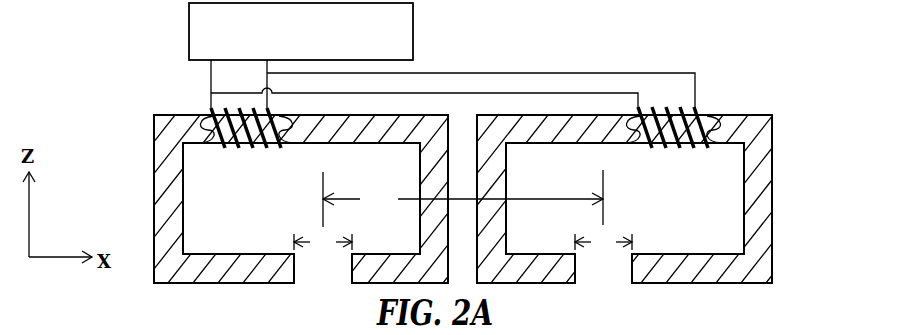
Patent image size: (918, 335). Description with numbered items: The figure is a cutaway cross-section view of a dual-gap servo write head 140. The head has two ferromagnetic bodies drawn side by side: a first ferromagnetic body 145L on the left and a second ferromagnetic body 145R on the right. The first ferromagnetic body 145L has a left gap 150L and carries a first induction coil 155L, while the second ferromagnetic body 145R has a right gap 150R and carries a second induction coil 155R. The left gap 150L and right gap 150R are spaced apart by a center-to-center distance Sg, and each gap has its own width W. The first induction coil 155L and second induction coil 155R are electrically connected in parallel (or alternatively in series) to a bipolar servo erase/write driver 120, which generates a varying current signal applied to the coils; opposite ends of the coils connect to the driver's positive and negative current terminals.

The bipolar servo erase/write driver 120 is at (189, 41).
The dual-gap servo write head 140 is at (108, 104).
The first ferromagnetic body 145L is at (165, 165).
The second ferromagnetic body 145R is at (757, 150).
The left gap 150L is at (346, 283).
The right gap 150R is at (625, 283).
The first induction coil 155L is at (255, 148).
The second induction coil 155R is at (665, 148).